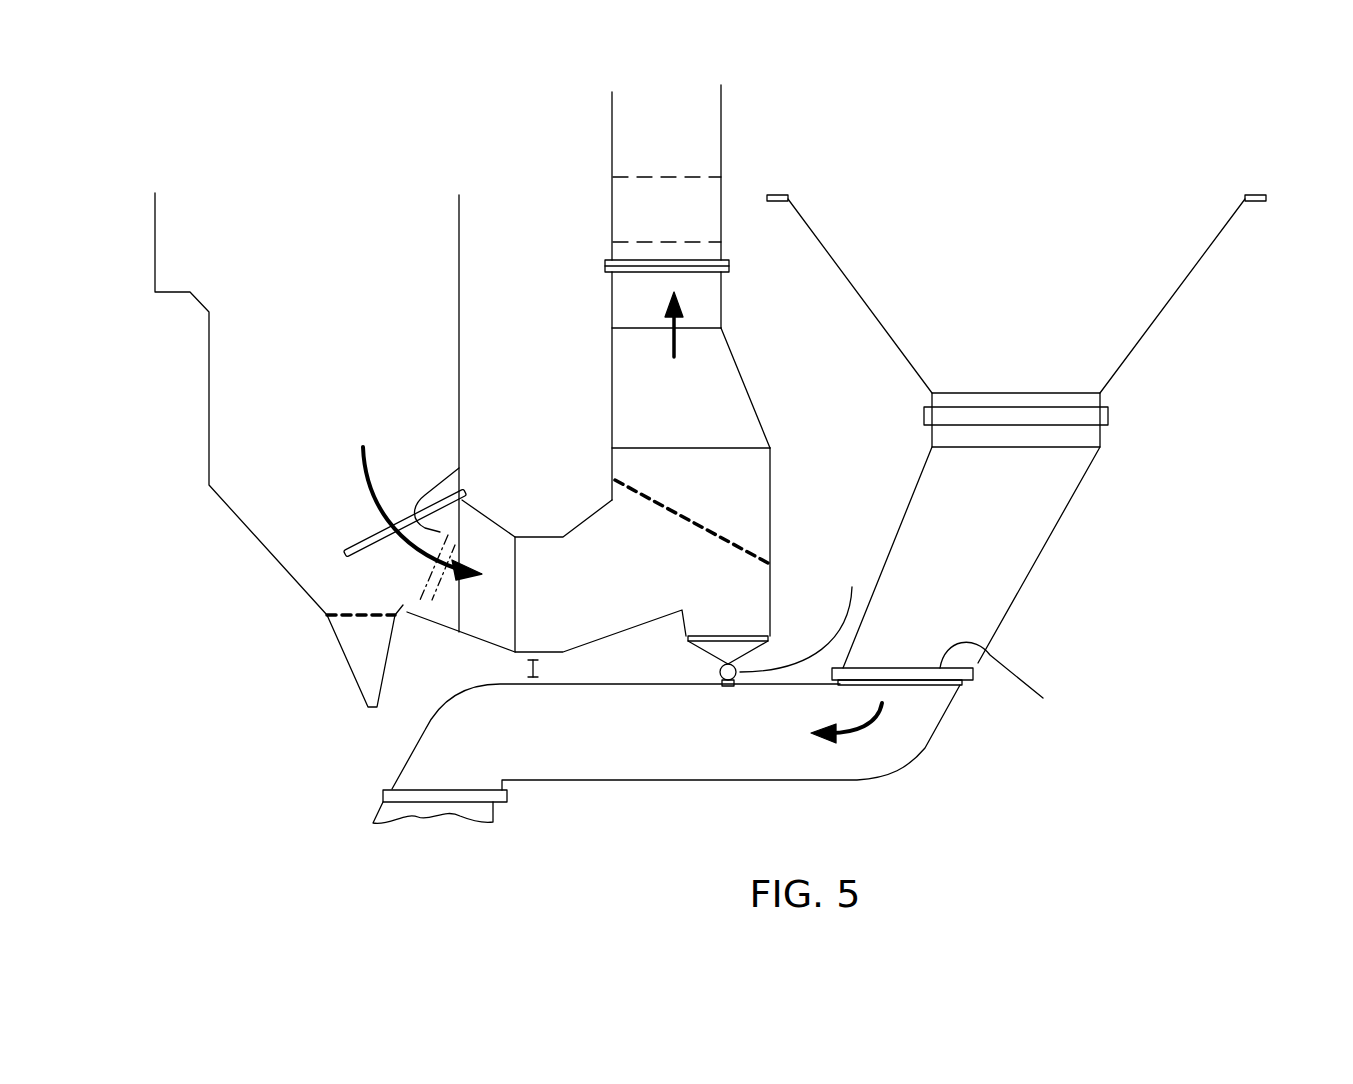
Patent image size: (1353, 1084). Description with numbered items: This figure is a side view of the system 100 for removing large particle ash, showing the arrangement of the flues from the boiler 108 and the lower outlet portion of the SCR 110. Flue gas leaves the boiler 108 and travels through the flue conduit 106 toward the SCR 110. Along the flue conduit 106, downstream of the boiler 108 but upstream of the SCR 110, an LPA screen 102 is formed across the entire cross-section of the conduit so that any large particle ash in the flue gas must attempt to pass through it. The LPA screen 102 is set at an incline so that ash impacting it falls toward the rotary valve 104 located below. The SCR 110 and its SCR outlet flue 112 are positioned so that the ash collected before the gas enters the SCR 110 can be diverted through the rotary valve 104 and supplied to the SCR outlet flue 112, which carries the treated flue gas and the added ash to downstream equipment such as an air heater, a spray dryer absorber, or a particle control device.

The system 100 is at (508, 202).
The LPA screen 102 is at (707, 527).
The rotary valve 104 is at (718, 672).
The flue conduit 106 is at (621, 580).
The boiler 108 is at (307, 282).
The SCR 110 is at (994, 301).
The SCR outlet flue 112 is at (469, 752).